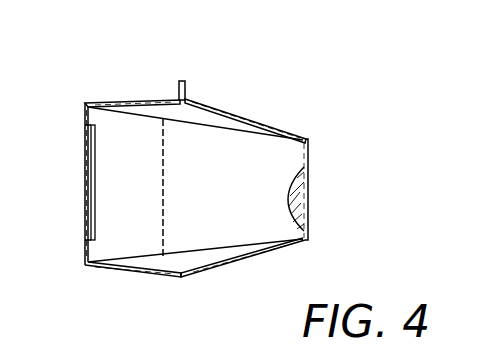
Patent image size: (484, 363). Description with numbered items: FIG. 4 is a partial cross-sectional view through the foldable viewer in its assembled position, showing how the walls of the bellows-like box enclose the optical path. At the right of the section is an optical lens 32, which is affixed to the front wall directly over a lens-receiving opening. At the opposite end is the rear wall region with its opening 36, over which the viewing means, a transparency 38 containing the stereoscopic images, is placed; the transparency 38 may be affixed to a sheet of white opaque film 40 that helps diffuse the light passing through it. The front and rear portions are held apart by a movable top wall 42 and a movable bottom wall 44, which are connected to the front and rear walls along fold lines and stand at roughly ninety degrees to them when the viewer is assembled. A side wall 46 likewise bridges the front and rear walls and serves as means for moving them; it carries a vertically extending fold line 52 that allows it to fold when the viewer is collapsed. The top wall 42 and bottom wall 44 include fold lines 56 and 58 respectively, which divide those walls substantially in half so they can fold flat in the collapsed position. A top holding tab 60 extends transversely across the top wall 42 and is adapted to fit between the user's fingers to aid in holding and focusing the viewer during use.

The optical lens 32 is at (310, 194).
The opening 36 is at (85, 134).
The transparency 38 is at (132, 201).
The sheet of white opaque film 40 is at (92, 192).
The top wall 42 is at (128, 100).
The bottom wall 44 is at (132, 276).
The side wall 46 is at (278, 151).
The fold line 52 is at (165, 177).
The fold line 56 is at (190, 98).
The fold line 58 is at (178, 278).
The top holding tab 60 is at (183, 81).